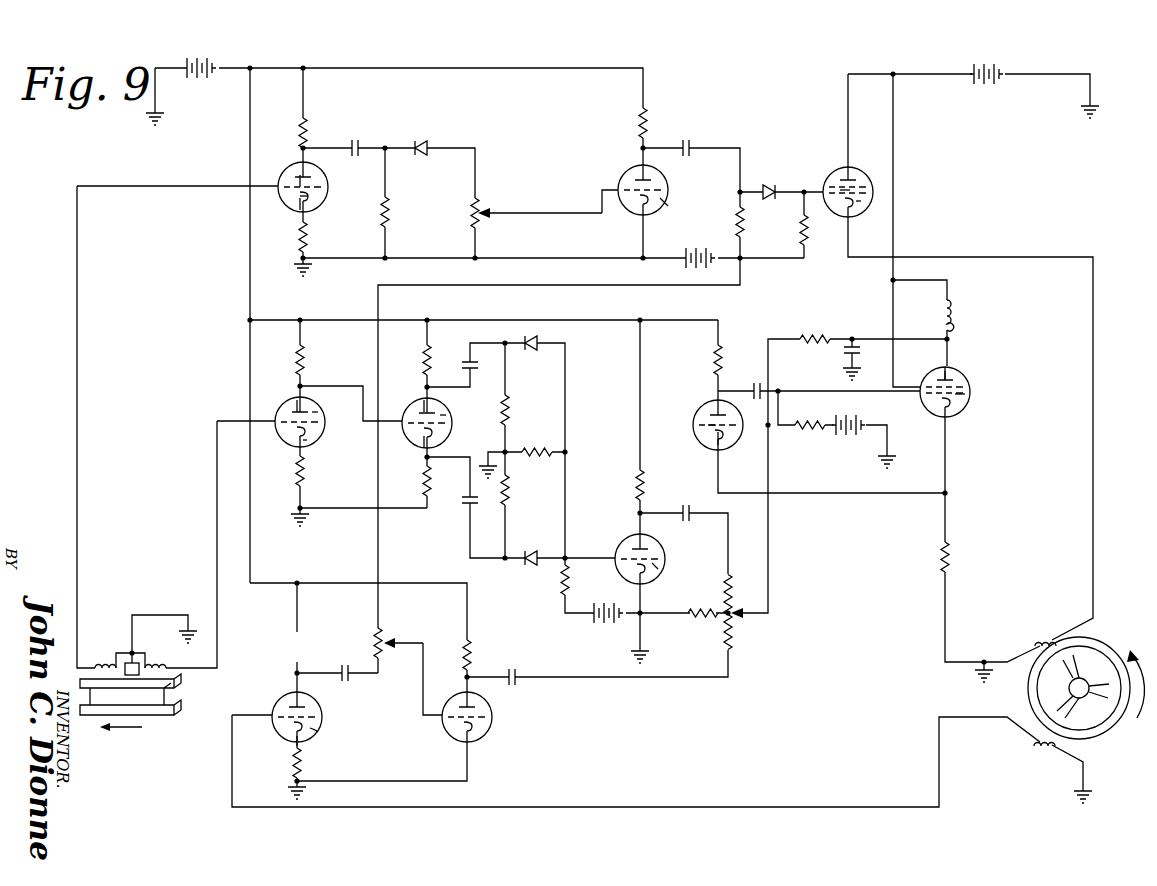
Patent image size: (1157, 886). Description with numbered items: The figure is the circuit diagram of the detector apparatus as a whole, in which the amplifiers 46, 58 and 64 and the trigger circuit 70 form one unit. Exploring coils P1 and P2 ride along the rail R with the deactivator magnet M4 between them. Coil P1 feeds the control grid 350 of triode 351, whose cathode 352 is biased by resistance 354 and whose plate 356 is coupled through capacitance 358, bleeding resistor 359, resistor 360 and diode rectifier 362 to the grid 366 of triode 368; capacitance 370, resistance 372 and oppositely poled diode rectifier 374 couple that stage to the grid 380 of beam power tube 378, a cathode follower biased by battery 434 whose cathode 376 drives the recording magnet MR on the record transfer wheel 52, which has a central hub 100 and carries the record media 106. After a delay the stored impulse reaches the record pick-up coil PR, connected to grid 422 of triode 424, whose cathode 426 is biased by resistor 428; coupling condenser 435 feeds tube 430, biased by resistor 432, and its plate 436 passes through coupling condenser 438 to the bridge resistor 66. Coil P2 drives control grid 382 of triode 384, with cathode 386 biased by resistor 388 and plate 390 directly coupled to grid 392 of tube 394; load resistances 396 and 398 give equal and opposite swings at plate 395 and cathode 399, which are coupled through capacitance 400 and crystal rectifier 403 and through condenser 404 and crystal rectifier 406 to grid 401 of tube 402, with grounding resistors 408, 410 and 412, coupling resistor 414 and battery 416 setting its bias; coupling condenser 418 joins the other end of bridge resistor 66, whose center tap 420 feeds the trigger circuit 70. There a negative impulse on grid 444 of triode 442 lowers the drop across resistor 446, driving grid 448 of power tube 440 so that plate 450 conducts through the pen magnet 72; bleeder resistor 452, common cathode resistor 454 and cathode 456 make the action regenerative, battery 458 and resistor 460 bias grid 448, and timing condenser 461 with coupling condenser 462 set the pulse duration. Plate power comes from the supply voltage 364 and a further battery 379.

The supply voltage 364 is at (218, 62).
The battery 379 is at (1000, 65).
The capacitance 358 is at (358, 138).
The diode rectifier 362 is at (428, 140).
The electronic amplifier 46 is at (563, 155).
The capacitance 370 is at (690, 138).
The control grid 350 is at (328, 186).
The plate 356 is at (297, 177).
The triode 351 is at (322, 199).
The cathode 352 is at (298, 205).
The resistance 354 is at (306, 240).
The coupling resistor 359 is at (388, 213).
The resistor 360 is at (485, 211).
The grid 366 is at (623, 185).
The triode 368 is at (687, 204).
The diode rectifier 374 is at (768, 185).
The battery 434 is at (704, 241).
The resistance 372 is at (807, 242).
The cathode 376 is at (850, 218).
The grid 380 is at (860, 186).
The beam power amplifier tube 378 is at (872, 200).
The pen magnet 72 is at (955, 312).
The bleeder resistor 452 is at (818, 330).
The timing condenser 461 is at (848, 352).
The coupling condenser 462 is at (762, 384).
The power tube 440 is at (962, 409).
The plate 450 is at (948, 378).
The grid 448 is at (968, 394).
The resistor 460 is at (800, 422).
The battery 458 is at (848, 438).
The trigger circuit 70 is at (808, 465).
The triode 442 is at (733, 445).
The grid 444 is at (700, 425).
The cathode 456 is at (716, 438).
The resistor 446 is at (722, 362).
The load resistance 396 is at (431, 362).
The capacitance 400 is at (485, 360).
The crystal rectifier 403 is at (544, 342).
The grounding resistor 408 is at (508, 412).
The grounding resistor 410 is at (546, 437).
The grounding resistor 412 is at (508, 490).
The grid 392 is at (444, 430).
The second stage tube 394 is at (448, 412).
The plate 395 is at (422, 405).
The cathode 399 is at (420, 442).
The cathode resistor 398 is at (430, 480).
The condenser 404 is at (466, 504).
The crystal rectifier 406 is at (530, 552).
The coupling resistor 414 is at (568, 582).
The battery 416 is at (608, 624).
The amplifier 64 is at (610, 490).
The coupling condenser 418 is at (685, 503).
The tube 402 is at (657, 551).
The grid 401 is at (658, 569).
The center tap 420 is at (720, 618).
The bridge resistor 66 is at (732, 600).
The cathode resistor 454 is at (948, 560).
The control grid 382 is at (318, 436).
The triode 384 is at (320, 411).
The plate 390 is at (296, 405).
The cathode 386 is at (305, 443).
The resistor 388 is at (303, 472).
The resistor 432 is at (382, 634).
The coupling condenser 435 is at (345, 662).
The plate 436 is at (463, 695).
The coupling condenser 438 is at (515, 668).
The triode 424 is at (318, 712).
The grid 422 is at (318, 732).
The cathode 426 is at (300, 742).
The resistor 428 is at (292, 768).
The tube 430 is at (490, 715).
The second electronic amplifier 58 is at (406, 750).
The record transfer wheel 52 is at (1089, 664).
The record media 106 is at (1100, 728).
The central hub 100 is at (1083, 686).
The recording magnet MR is at (1040, 644).
The record pick-up coil PR is at (1036, 748).
The pick-up coil P1 is at (106, 662).
The pick-up coil P2 is at (166, 652).
The deactivator magnet M4 is at (130, 628).
The rail R is at (170, 695).